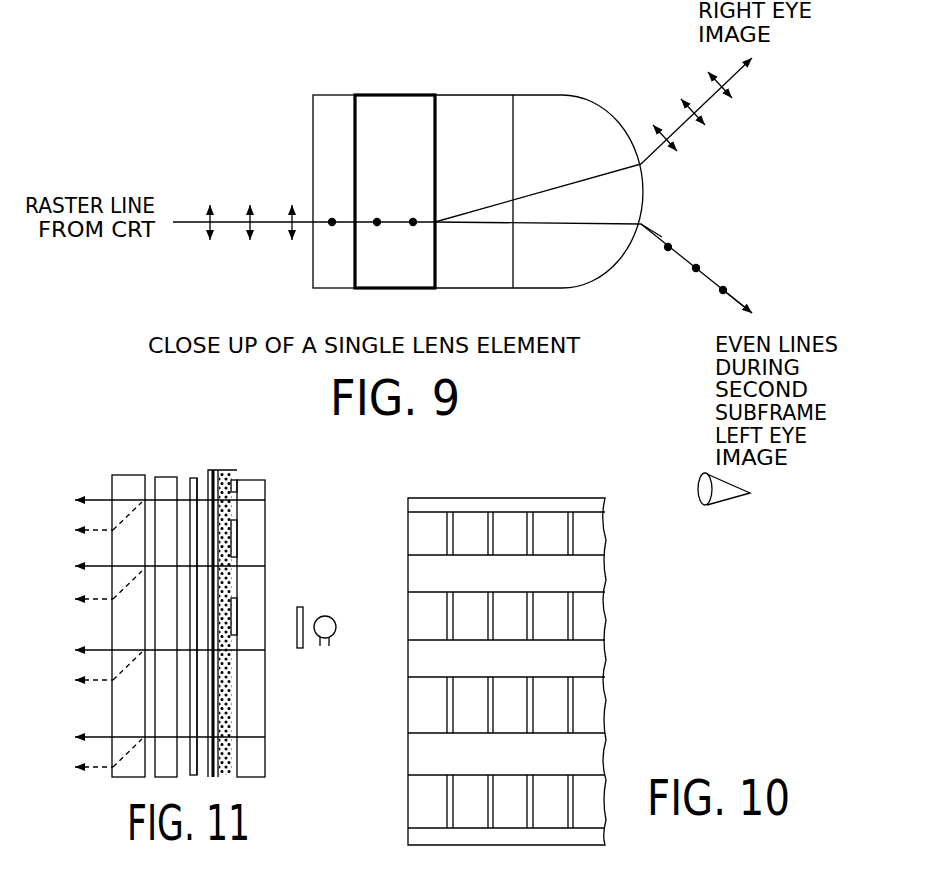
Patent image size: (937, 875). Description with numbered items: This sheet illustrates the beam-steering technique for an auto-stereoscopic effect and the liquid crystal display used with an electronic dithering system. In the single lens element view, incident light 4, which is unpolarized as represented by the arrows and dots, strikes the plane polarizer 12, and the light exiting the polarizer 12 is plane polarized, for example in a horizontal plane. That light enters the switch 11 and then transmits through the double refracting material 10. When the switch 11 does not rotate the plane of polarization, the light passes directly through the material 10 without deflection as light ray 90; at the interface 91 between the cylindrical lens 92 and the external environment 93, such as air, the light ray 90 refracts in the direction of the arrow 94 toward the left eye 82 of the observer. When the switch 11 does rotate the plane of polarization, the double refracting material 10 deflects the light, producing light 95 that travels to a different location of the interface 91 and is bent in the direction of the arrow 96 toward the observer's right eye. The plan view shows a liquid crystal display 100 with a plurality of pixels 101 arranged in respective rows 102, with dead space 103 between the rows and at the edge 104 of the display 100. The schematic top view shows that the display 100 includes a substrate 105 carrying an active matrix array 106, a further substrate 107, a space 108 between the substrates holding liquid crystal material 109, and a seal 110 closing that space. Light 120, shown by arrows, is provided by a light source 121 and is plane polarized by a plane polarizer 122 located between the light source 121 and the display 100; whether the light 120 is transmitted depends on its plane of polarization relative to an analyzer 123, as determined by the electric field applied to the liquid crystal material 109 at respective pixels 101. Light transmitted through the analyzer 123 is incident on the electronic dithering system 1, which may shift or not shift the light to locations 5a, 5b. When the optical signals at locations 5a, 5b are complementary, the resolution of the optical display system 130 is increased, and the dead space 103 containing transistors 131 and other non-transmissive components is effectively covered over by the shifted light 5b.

In FIG. 9, the incident light 4 is at (183, 220).
In FIG. 9, the double refracting material 10 is at (488, 94).
In FIG. 11, the double refracting material 10 is at (127, 777).
In FIG. 9, the switch 11 is at (405, 93).
In FIG. 11, the switch 11 is at (167, 777).
In FIG. 9, the plane polarizer 12 is at (313, 117).
In FIG. 9, the light ray 90 is at (542, 226).
In FIG. 9, the interface 91 is at (632, 253).
In FIG. 9, the cylindrical lens 92 is at (605, 265).
In FIG. 9, the external environment 93 is at (696, 274).
In FIG. 9, the arrow 94 is at (738, 297).
In FIG. 9, the light 95 is at (597, 173).
In FIG. 9, the arrow 96 is at (743, 70).
In FIG. 9, the left eye 82 is at (735, 498).
In FIG. 11, the liquid crystal display 100 is at (153, 422).
In FIG. 10, the liquid crystal display 100 is at (481, 482).
In FIG. 10, the pixels 101 is at (588, 527).
In FIG. 11, the rows 102 is at (203, 495).
In FIG. 10, the rows 102 is at (616, 535).
In FIG. 10, the dead space 103 is at (598, 575).
In FIG. 10, the edge 104 is at (606, 508).
In FIG. 11, the substrate 105 is at (257, 748).
In FIG. 11, the active matrix array 106 is at (247, 783).
In FIG. 11, the further substrate 107 is at (197, 481).
In FIG. 11, the space 108 is at (233, 777).
In FIG. 11, the liquid crystal material 109 is at (233, 758).
In FIG. 11, the seal 110 is at (222, 467).
In FIG. 11, the light 120 is at (266, 502).
In FIG. 11, the light source 121 is at (352, 608).
In FIG. 11, the plane polarizer 122 is at (299, 648).
In FIG. 11, the analyzer 123 is at (190, 776).
In FIG. 11, the optical display system 130 is at (92, 420).
In FIG. 11, the transistors 131 is at (237, 538).
In FIG. 11, the electronic dithering system 1 is at (141, 463).
In FIG. 11, the location 5a is at (98, 500).
In FIG. 11, the location 5b is at (98, 528).